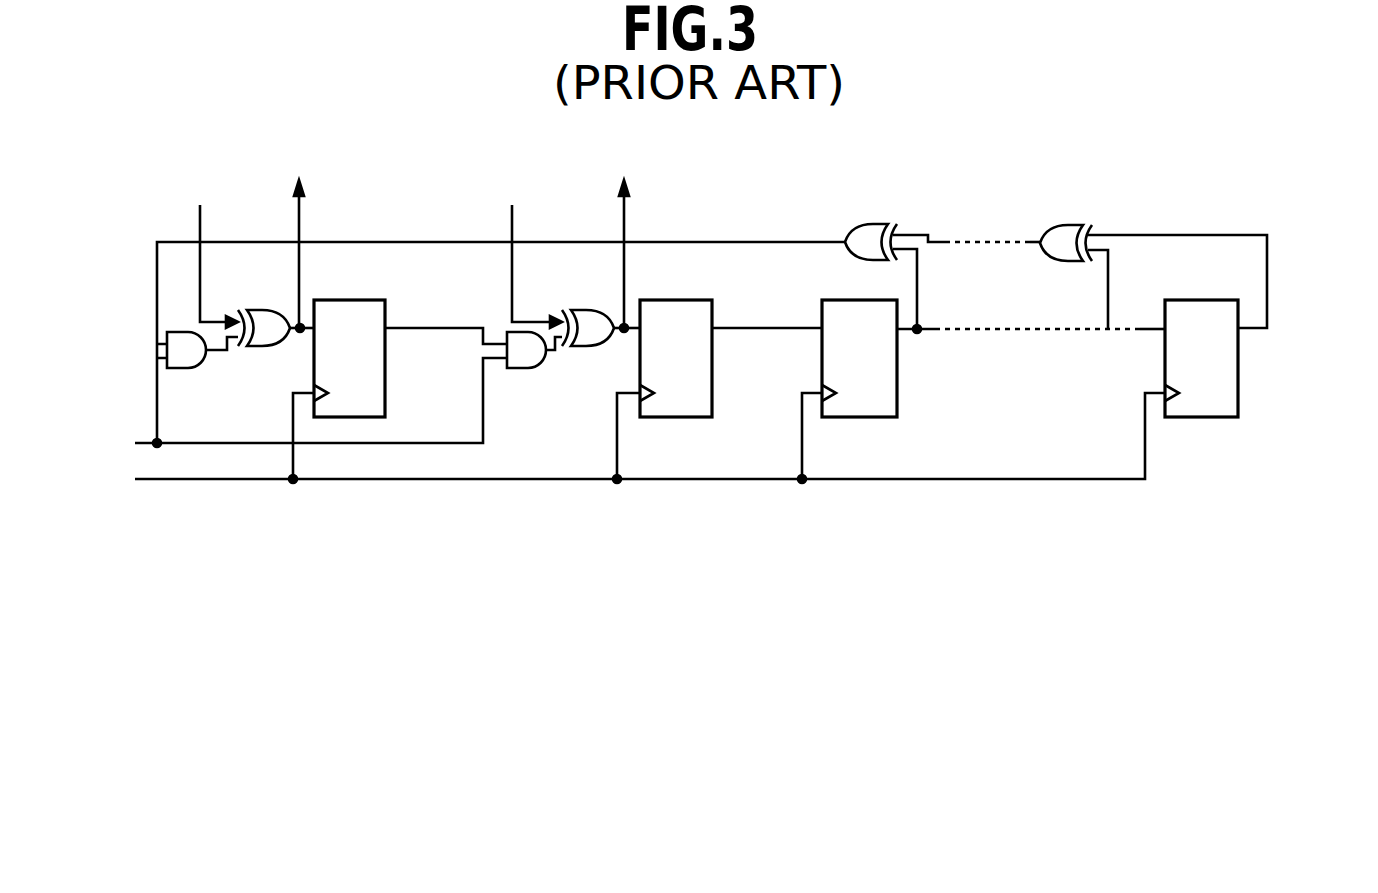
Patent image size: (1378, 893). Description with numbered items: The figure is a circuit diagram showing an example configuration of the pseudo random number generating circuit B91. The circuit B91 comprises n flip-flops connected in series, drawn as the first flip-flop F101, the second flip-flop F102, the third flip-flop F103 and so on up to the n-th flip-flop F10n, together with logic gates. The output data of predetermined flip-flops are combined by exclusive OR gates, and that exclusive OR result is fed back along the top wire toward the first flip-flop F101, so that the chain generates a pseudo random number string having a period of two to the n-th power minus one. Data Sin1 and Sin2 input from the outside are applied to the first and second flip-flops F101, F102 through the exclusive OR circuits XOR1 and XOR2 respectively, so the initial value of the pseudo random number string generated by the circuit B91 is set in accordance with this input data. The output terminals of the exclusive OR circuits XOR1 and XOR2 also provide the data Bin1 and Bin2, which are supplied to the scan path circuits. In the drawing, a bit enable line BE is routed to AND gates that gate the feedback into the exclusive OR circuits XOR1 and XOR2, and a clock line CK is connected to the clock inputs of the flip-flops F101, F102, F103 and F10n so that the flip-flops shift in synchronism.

The pseudo random number generating circuit B91 is at (297, 105).
The exclusive OR circuit XOR1 is at (258, 310).
The exclusive OR circuit XOR2 is at (582, 310).
The first flip-flop F101 is at (386, 393).
The second flip-flop F102 is at (713, 396).
The third flip-flop F103 is at (898, 370).
The n-th flip-flop F10n is at (1240, 370).
The input signal Sin1 is at (209, 247).
The input signal Sin2 is at (533, 247).
The output data Bin1 is at (301, 235).
The output data Bin2 is at (627, 235).
The bit enable signal BE is at (301, 408).
The clock signal CK is at (630, 444).